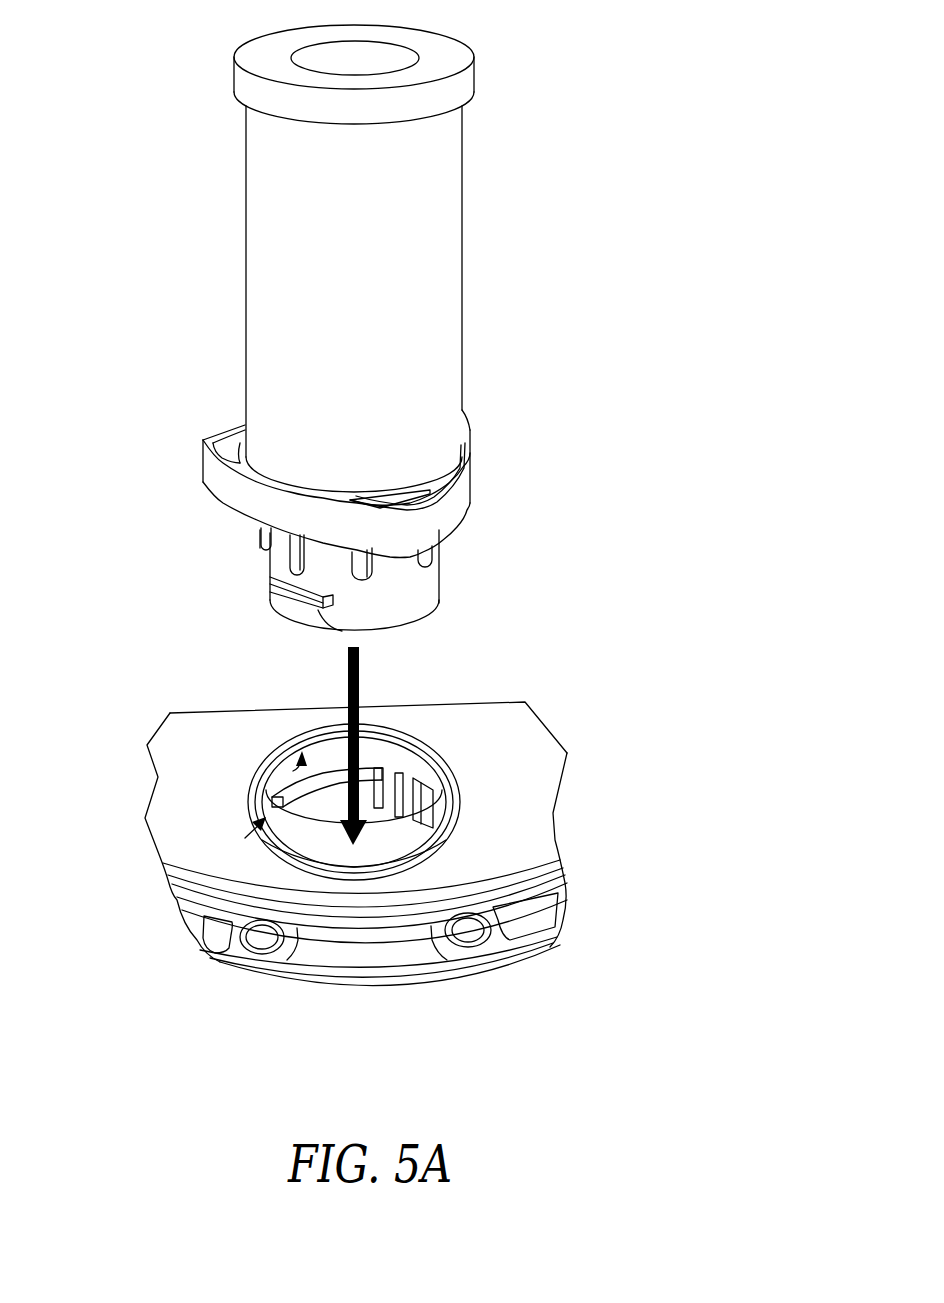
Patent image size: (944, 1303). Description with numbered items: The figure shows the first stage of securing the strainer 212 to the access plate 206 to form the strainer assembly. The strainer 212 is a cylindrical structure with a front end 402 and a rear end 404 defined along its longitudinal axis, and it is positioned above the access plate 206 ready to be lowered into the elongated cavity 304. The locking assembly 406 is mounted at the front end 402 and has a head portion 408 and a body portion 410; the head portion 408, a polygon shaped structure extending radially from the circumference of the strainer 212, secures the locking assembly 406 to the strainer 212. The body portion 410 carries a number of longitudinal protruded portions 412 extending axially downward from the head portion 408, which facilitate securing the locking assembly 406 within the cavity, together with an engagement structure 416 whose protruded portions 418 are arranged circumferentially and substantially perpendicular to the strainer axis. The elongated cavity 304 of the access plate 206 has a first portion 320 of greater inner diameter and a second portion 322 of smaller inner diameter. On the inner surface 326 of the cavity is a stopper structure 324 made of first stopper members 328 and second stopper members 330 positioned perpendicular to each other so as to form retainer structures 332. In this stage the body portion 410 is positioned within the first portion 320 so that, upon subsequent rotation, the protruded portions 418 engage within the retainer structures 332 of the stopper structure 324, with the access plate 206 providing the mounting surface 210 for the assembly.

The access plate 206 is at (522, 837).
The base top face 210 is at (528, 780).
The strainer 212 is at (463, 280).
The elongated cavity 304 is at (358, 857).
The first portion 320 is at (385, 746).
The second portion 322 is at (418, 840).
The stopper structure 324 is at (245, 838).
The inner surface 326 is at (293, 771).
The first stopper members 328 is at (330, 776).
The second stopper members 330 is at (390, 792).
The retainer structures 332 is at (305, 798).
The front end 402 is at (490, 440).
The rear end 404 is at (489, 104).
The locking assembly 406 is at (152, 550).
The head portion 408 is at (217, 482).
The body portion 410 is at (439, 580).
The longitudinal protruded portions 412 is at (253, 532).
The engagement structure 416 is at (283, 602).
The protruded portions 418 is at (323, 606).